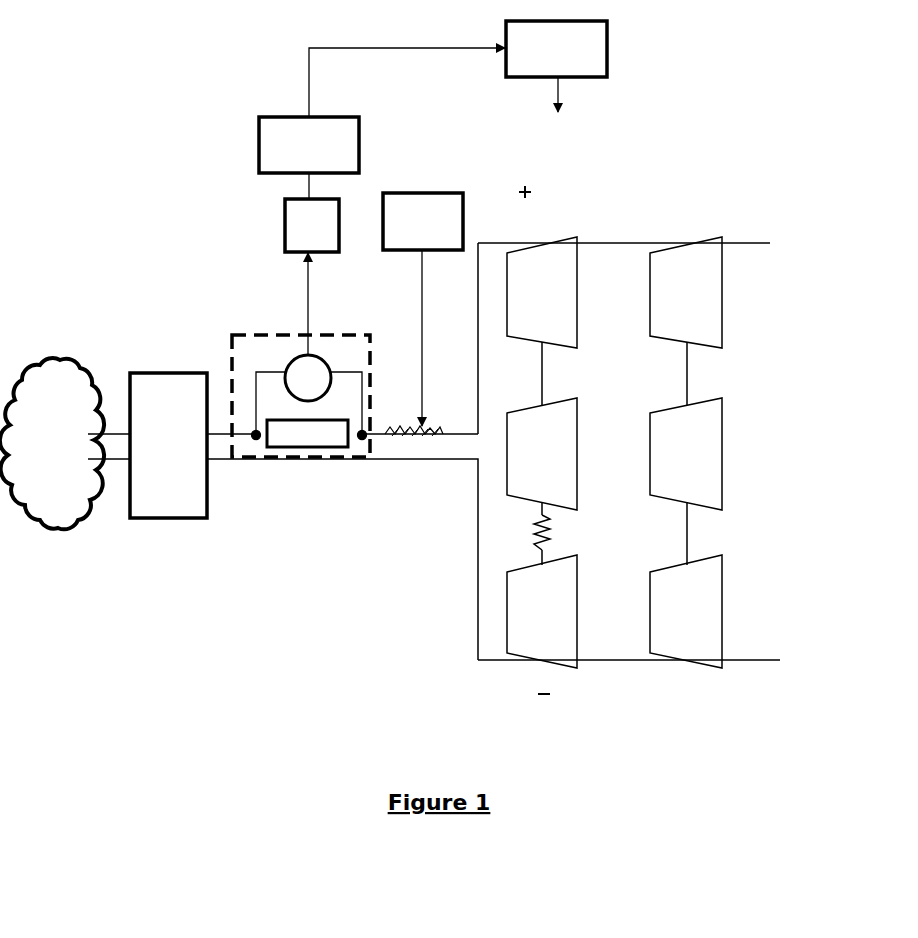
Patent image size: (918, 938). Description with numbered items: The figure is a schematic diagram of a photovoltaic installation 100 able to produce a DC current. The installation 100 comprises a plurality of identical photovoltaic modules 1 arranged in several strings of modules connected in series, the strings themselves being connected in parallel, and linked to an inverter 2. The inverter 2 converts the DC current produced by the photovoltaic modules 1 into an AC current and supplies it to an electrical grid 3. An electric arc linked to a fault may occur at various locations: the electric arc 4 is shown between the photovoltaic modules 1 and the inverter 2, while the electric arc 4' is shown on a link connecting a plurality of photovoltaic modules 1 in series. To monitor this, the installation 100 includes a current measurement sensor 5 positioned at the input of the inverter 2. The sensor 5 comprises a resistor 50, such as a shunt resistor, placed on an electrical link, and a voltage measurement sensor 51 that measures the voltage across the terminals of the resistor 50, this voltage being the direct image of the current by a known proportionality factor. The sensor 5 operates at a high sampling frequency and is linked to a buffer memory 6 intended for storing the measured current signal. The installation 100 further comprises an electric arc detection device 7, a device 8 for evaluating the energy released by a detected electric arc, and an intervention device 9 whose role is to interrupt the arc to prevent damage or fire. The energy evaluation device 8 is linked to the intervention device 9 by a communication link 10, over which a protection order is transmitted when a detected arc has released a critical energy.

The photovoltaic modules 1 is at (650, 278).
The inverter 2 is at (147, 372).
The electrical grid 3 is at (55, 400).
The electric arc 4 is at (414, 388).
The electric arc 4' is at (479, 538).
The current measurement sensor 5 is at (338, 358).
The resistor 50 is at (308, 447).
The voltage measurement sensor 51 is at (287, 372).
The buffer memory 6 is at (296, 230).
The electric arc detection device 7 is at (447, 215).
The energy evaluation device 8 is at (283, 150).
The intervention device 9 is at (594, 52).
The communication link 10 is at (309, 80).
The photovoltaic installation 100 is at (750, 147).